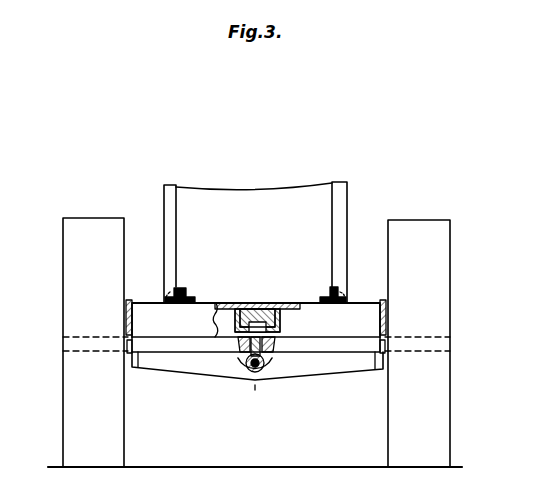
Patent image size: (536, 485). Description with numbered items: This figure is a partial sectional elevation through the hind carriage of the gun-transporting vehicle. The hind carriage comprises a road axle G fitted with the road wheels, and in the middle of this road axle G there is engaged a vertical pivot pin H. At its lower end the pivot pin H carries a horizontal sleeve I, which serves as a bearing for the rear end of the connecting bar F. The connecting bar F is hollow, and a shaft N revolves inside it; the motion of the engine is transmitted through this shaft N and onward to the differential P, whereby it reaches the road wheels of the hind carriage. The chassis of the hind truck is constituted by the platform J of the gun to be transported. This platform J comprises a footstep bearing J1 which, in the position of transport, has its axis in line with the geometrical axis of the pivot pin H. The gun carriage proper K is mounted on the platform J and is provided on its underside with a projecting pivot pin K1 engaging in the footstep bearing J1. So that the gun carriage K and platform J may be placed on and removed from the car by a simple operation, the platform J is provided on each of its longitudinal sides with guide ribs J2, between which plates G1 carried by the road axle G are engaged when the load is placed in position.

The road axle G is at (104, 230).
The plates G1 is at (400, 367).
The connecting bar F is at (243, 375).
The gun carriage K is at (256, 206).
The chassis platform J is at (151, 311).
The footstep bearing J1 is at (279, 306).
The guide ribs J2 is at (403, 298).
The projecting pivot pin K1 is at (251, 311).
The vertical pivot pin H is at (268, 340).
The horizontal sleeve I is at (250, 370).
The shaft N is at (263, 372).
The differential P is at (255, 384).